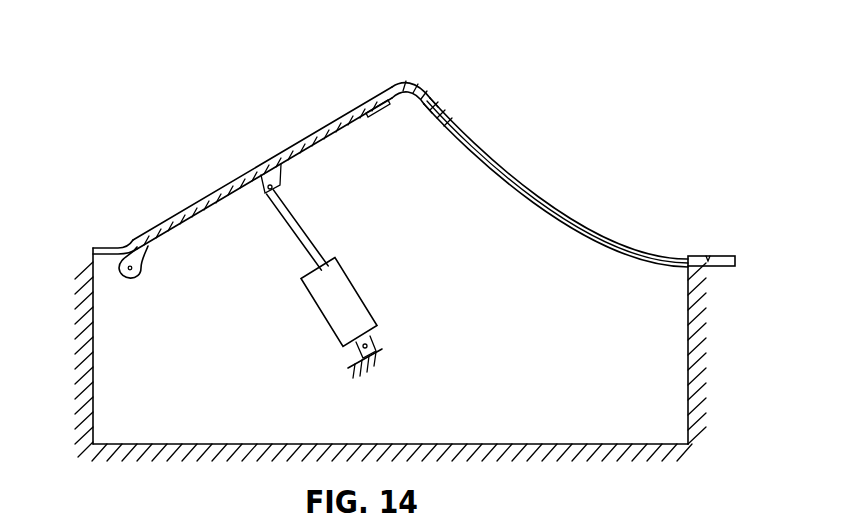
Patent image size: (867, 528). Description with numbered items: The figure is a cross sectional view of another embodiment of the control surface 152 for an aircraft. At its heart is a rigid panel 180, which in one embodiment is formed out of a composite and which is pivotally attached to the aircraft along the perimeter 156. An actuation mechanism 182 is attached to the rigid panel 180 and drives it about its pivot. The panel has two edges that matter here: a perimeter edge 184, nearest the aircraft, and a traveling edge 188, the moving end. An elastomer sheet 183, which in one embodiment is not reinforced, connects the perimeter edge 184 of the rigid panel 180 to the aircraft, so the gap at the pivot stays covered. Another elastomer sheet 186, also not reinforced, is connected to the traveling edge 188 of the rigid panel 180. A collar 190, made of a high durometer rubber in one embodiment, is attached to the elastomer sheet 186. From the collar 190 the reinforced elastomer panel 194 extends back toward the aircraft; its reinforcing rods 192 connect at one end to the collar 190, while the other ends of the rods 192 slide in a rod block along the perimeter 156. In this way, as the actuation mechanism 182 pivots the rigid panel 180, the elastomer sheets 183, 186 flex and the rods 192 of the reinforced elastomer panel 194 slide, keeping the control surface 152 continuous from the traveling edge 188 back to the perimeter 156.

The control surface 152 is at (300, 35).
The perimeter 156 is at (726, 257).
The rigid panel 180 is at (195, 212).
The actuation mechanism 182 is at (360, 238).
The elastomer sheet 183 is at (103, 250).
The perimeter edge 184 is at (133, 238).
The elastomer sheet 186 is at (401, 84).
The traveling edge 188 is at (386, 104).
The collar 190 is at (443, 110).
The reinforcing rods 192 is at (556, 214).
The reinforced elastomer panel 194 is at (528, 190).